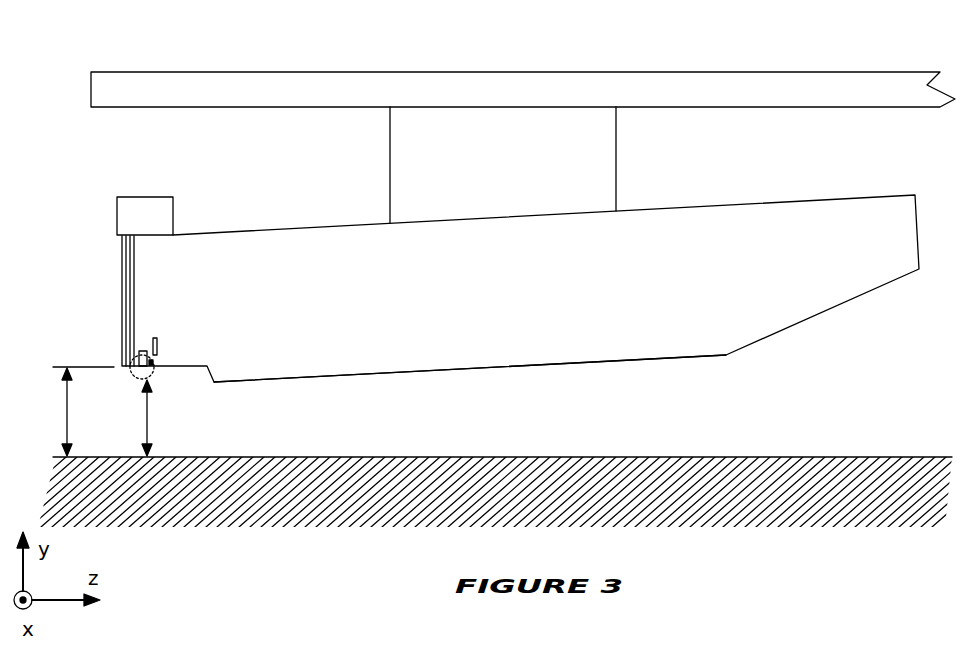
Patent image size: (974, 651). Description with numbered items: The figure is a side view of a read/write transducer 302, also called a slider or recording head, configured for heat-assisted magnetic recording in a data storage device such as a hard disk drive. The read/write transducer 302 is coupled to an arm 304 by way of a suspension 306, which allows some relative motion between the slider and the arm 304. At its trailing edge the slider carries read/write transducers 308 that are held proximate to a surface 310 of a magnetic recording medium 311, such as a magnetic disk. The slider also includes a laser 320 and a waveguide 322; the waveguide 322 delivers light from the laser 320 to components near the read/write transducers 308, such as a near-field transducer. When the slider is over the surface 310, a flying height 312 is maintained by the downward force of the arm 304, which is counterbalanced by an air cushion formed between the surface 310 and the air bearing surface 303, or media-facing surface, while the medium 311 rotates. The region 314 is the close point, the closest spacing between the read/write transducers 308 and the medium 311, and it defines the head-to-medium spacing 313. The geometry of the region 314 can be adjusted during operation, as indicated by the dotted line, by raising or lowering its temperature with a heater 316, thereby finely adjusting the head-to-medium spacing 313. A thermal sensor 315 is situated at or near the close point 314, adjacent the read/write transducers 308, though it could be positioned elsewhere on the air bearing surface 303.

The read/write transducer 302 is at (782, 212).
The air bearing surface 303 is at (336, 375).
The arm 304 is at (848, 80).
The suspension 306 is at (614, 157).
The read/write transducers 308 is at (139, 351).
The surface 310 is at (786, 457).
The magnetic recording medium 311 is at (805, 513).
The flying height 312 is at (64, 411).
The head-to-medium spacing 313 is at (124, 418).
The close point region 314 is at (155, 376).
The thermal sensor 315 is at (153, 363).
The heater 316 is at (153, 338).
The laser 320 is at (138, 200).
The waveguide 322 is at (125, 270).